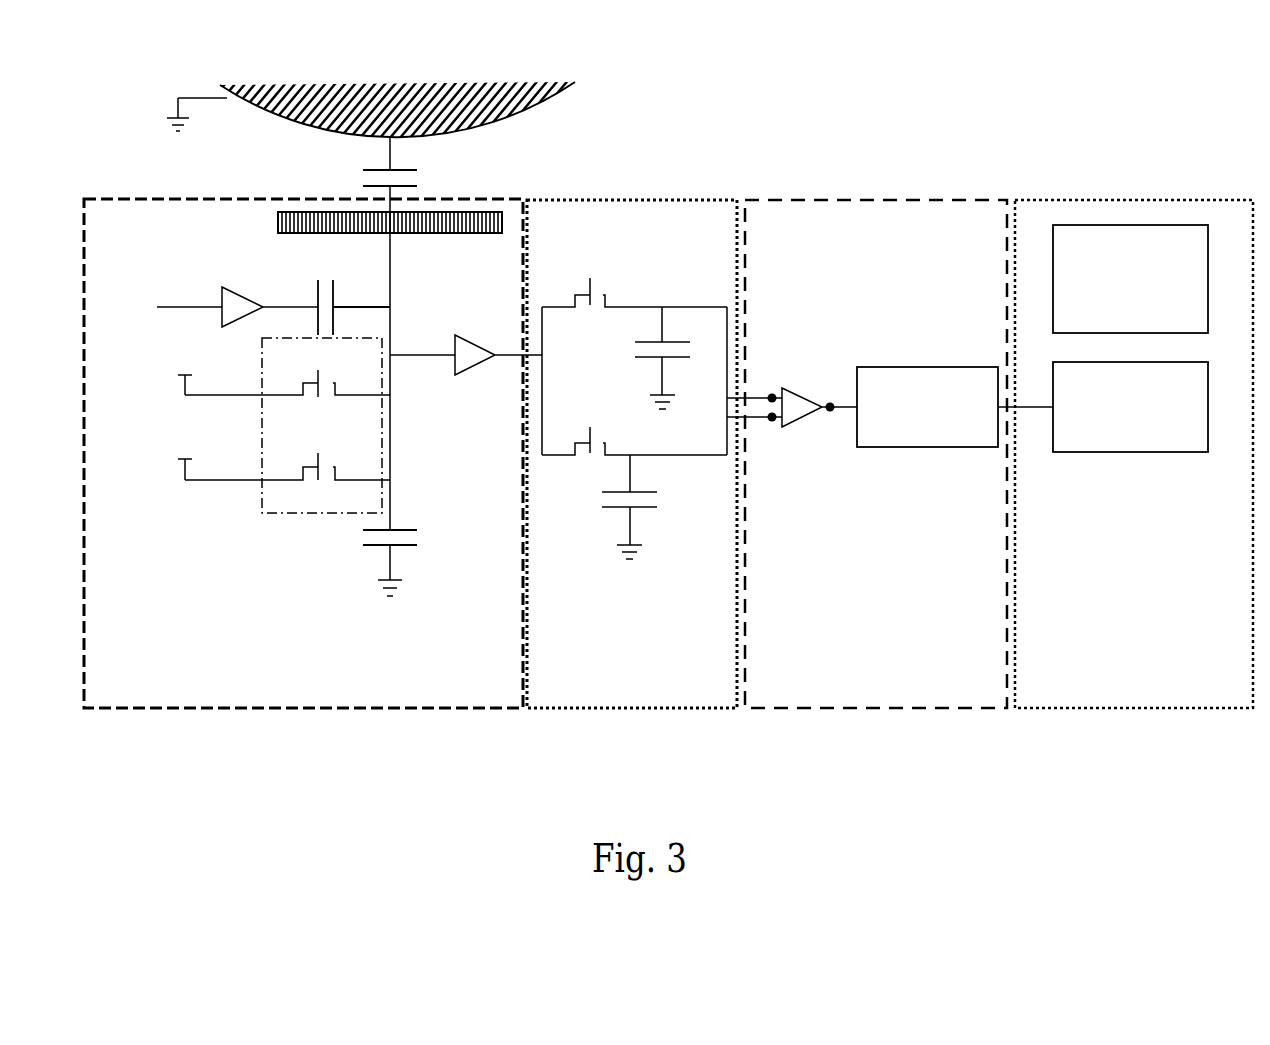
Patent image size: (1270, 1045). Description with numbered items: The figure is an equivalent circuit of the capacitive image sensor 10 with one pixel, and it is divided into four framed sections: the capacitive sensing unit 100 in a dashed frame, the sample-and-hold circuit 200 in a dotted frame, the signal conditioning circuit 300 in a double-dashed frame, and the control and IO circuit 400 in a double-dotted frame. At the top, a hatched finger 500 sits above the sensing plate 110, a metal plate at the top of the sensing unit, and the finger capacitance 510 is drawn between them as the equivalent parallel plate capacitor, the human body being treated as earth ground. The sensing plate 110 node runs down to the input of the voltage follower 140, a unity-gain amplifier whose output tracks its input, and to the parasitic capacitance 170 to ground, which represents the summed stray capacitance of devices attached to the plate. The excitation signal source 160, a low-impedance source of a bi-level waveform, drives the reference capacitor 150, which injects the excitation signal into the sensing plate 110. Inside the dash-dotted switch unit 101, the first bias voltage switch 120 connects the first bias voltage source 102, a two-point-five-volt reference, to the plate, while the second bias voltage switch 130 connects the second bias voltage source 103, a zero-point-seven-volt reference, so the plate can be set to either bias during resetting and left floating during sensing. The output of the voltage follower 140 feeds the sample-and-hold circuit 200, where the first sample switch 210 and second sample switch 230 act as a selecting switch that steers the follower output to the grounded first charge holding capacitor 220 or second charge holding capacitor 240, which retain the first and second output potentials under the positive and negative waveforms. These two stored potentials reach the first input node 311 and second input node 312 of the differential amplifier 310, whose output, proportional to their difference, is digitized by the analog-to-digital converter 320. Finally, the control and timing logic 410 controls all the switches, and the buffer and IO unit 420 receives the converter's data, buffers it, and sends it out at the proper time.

The capacitive image sensor 10 is at (1213, 95).
The capacitive sensing unit 100 is at (303, 474).
The switch unit 101 is at (262, 513).
The first bias voltage source 102 is at (185, 377).
The second bias voltage source 103 is at (210, 446).
The sensing plate 110 is at (278, 222).
The first bias voltage switch 120 is at (325, 382).
The second bias voltage switch 130 is at (325, 466).
The voltage follower 140 is at (480, 363).
The reference capacitor 150 is at (316, 293).
The excitation signal source 160 is at (220, 297).
The parasitic capacitance 170 is at (400, 530).
The sample-and-hold circuit 200 is at (632, 491).
The first sample switch 210 is at (592, 290).
The first charge holding capacitor 220 is at (648, 363).
The second sample switch 230 is at (603, 442).
The second charge holding capacitor 240 is at (625, 508).
The signal conditioning circuit 300 is at (876, 491).
The differential amplifier 310 is at (798, 423).
The first input node 311 is at (778, 387).
The second input node 312 is at (773, 425).
The analog-to-digital converter 320 is at (925, 447).
The control and IO circuit 400 is at (1134, 491).
The control and timing logic 410 is at (1130, 279).
The buffer and IO unit 420 is at (1130, 407).
The finger 500 is at (300, 123).
The finger capacitance 510 is at (400, 168).